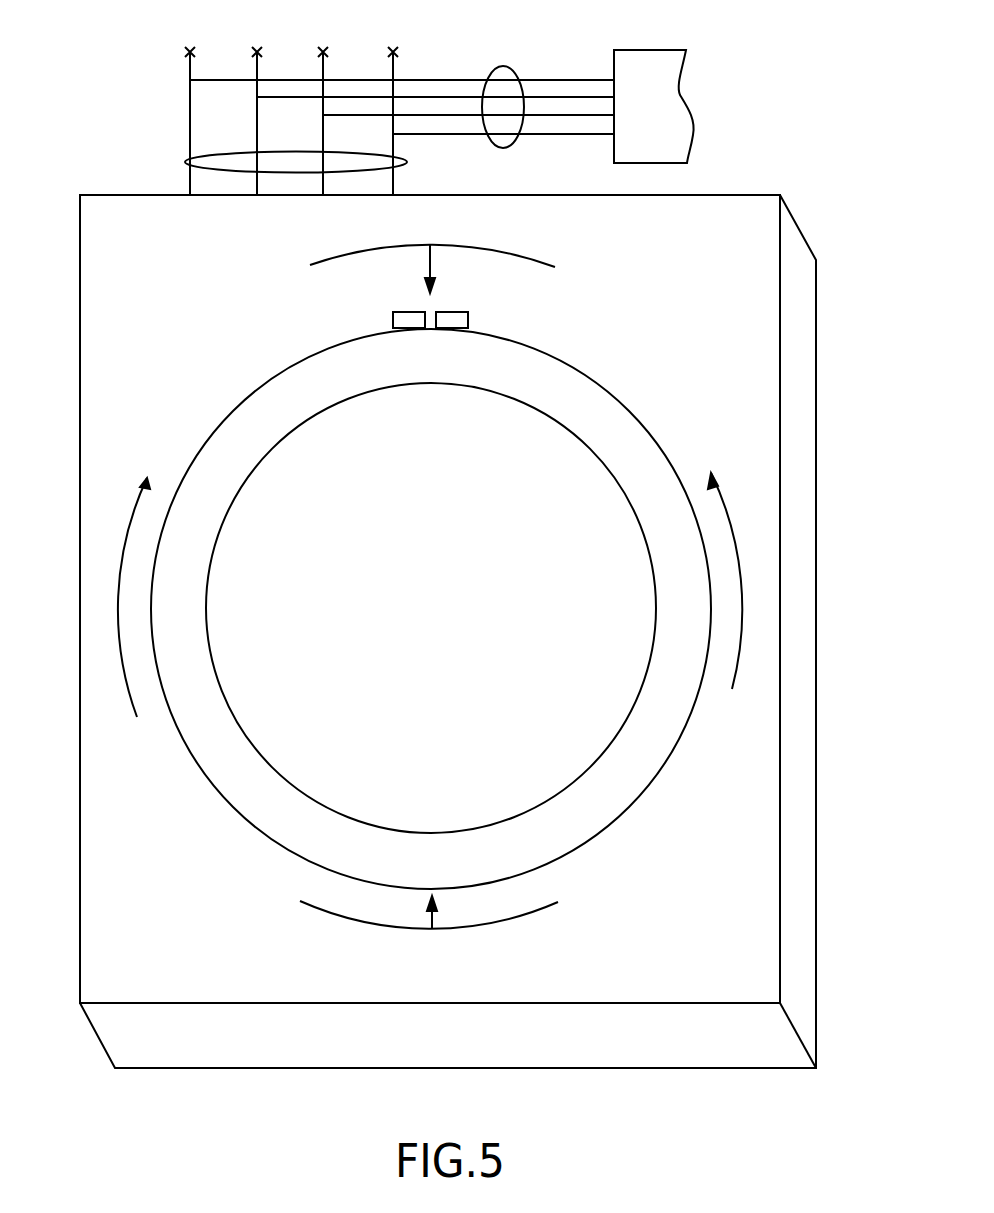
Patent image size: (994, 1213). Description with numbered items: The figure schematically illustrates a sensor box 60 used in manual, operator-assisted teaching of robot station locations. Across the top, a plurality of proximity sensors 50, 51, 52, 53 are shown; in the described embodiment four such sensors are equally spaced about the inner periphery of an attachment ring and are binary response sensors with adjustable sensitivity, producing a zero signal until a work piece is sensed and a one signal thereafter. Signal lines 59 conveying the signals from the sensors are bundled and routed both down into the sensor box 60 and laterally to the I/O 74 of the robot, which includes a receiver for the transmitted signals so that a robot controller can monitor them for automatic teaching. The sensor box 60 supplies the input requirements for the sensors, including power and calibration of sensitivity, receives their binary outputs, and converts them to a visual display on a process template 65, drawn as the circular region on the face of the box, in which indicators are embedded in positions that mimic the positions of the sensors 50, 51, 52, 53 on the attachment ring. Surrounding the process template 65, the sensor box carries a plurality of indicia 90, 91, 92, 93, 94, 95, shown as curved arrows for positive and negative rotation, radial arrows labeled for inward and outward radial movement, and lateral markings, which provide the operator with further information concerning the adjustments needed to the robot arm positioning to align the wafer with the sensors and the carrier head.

The proximity sensor 50 is at (195, 48).
The proximity sensor 51 is at (262, 48).
The proximity sensor 52 is at (328, 48).
The proximity sensor 53 is at (398, 48).
The signal lines 59 is at (513, 67).
The sensor box 60 is at (80, 283).
The process template 65 is at (446, 766).
The I/O of the robot 74 is at (648, 58).
The indicia 90 is at (736, 690).
The indicia 91 is at (123, 668).
The indicia 92 is at (528, 264).
The indicia 93 is at (531, 913).
The indicia 94 is at (294, 603).
The indicia 95 is at (589, 610).